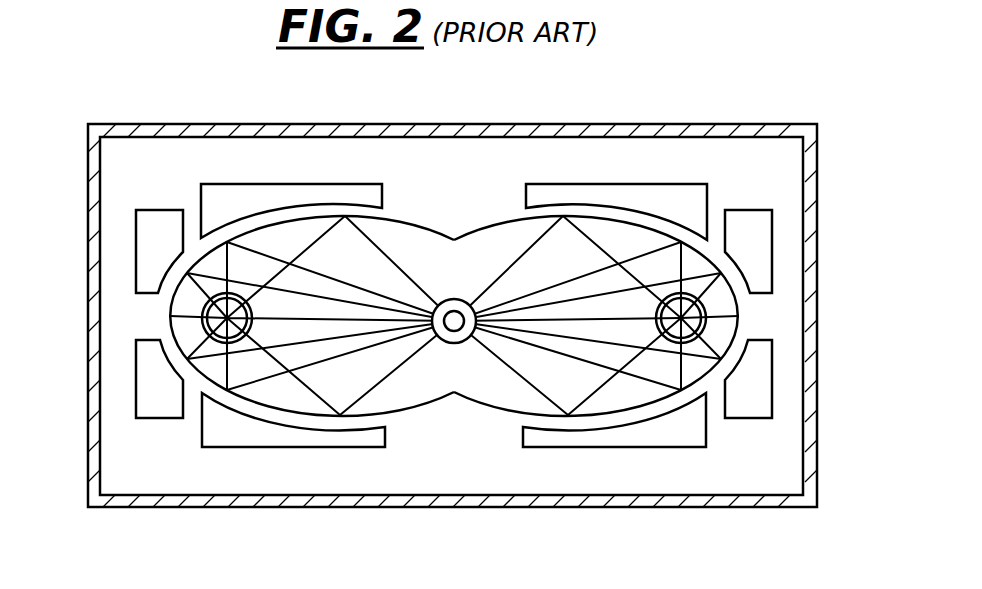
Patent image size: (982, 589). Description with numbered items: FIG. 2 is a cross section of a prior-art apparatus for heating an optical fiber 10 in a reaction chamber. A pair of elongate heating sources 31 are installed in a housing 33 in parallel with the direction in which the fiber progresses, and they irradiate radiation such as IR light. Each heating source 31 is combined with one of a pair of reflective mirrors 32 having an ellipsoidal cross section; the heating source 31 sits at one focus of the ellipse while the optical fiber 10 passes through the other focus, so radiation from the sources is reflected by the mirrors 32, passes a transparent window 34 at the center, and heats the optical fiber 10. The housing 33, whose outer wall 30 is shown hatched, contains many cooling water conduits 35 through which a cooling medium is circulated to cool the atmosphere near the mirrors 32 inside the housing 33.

The optical fiber 10 is at (450, 331).
The housing 30 is at (90, 462).
The elongate heating source 31 is at (170, 313).
The reflective mirror 32 is at (320, 217).
The housing 33 is at (817, 182).
The transparent window 34 is at (453, 299).
The cooling water conduit 35 is at (247, 192).